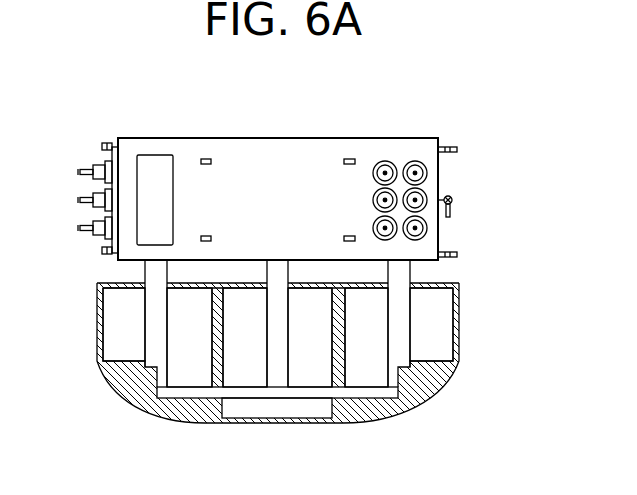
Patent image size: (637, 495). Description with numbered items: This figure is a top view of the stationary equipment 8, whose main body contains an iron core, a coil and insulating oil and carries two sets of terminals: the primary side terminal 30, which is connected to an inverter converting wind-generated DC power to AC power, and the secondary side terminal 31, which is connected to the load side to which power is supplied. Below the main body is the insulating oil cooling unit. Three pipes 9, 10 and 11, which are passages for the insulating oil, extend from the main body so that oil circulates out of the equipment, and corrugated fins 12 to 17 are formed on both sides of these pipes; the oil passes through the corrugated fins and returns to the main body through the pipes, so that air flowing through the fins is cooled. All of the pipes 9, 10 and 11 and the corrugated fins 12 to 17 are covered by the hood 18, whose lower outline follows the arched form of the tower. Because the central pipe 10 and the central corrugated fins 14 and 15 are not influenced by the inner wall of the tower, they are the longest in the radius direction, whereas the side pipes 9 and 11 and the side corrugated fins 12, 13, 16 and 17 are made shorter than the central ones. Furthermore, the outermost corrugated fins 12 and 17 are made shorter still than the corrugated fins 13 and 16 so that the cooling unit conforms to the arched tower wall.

The stationary equipment 8 is at (250, 150).
The pipe 9 is at (400, 333).
The pipe 10 is at (274, 356).
The pipe 11 is at (153, 332).
The corrugated fin 12 is at (440, 320).
The corrugated fin 13 is at (367, 365).
The corrugated fin 14 is at (307, 373).
The corrugated fin 15 is at (238, 362).
The corrugated fin 16 is at (190, 367).
The corrugated fin 17 is at (115, 318).
The hood 18 is at (432, 386).
The primary side terminal 30 is at (387, 160).
The secondary side terminal 31 is at (93, 165).